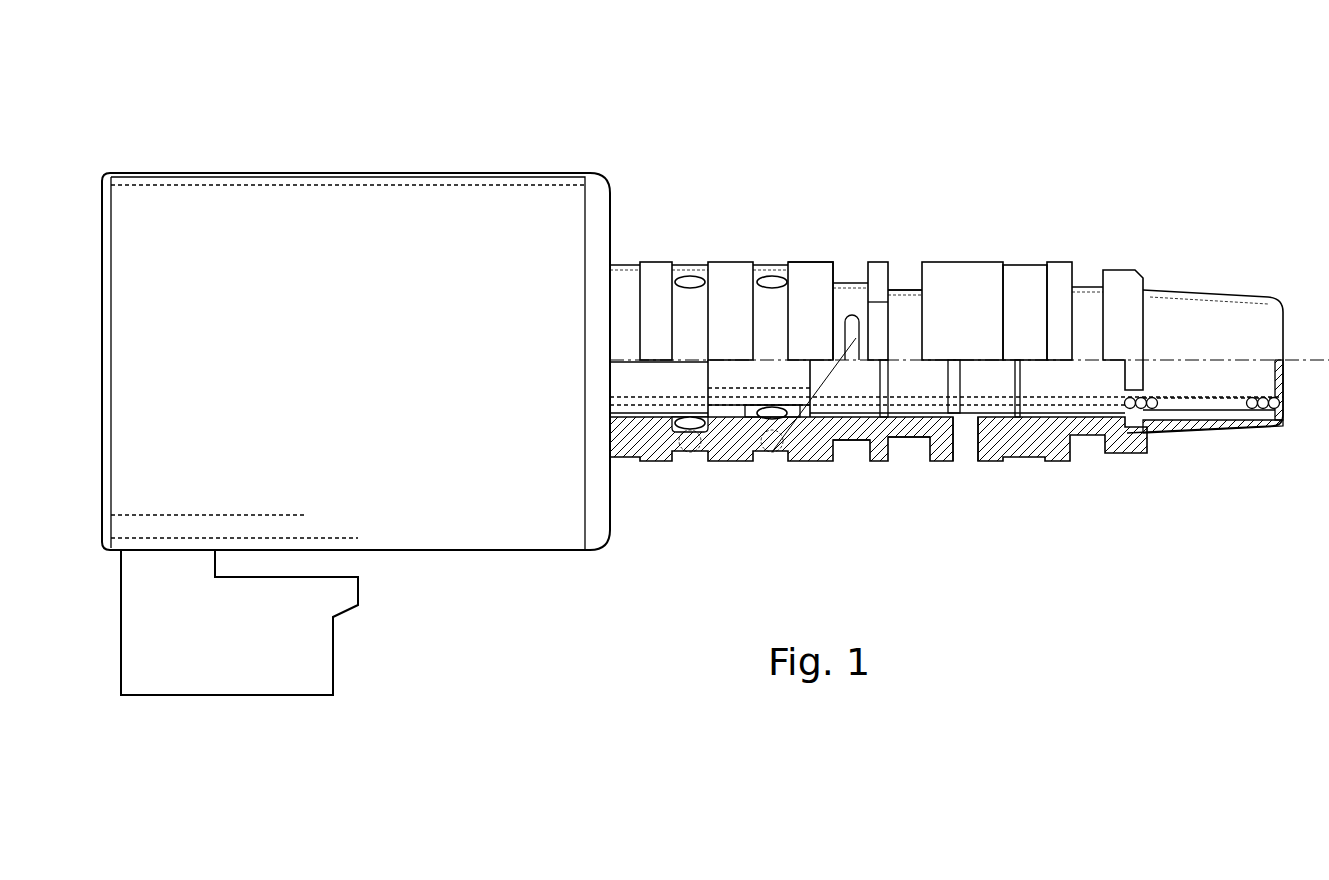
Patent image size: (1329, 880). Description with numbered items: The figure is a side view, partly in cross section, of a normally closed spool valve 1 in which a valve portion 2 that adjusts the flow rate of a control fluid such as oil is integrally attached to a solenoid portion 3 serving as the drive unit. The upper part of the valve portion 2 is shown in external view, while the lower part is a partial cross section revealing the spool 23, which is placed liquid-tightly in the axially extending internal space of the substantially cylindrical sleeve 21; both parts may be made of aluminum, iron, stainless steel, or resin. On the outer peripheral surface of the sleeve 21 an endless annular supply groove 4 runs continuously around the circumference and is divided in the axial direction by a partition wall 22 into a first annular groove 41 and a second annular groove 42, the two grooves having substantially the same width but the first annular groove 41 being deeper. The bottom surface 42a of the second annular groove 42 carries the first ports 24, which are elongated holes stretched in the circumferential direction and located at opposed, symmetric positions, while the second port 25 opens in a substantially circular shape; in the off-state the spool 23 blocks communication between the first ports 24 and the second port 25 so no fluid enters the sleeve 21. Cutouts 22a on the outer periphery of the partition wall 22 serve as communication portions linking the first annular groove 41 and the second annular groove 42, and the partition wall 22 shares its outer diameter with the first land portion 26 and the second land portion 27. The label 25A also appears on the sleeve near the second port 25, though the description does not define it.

The spool valve 1 is at (1014, 87).
The valve portion 2 is at (1253, 257).
The solenoid portion 3 is at (394, 172).
The supply groove 4 is at (937, 133).
The first annular groove 41 is at (893, 278).
The second annular groove 42 is at (846, 265).
The bottom surface 42a is at (855, 442).
The sleeve 21 is at (1121, 267).
The partition wall 22 is at (882, 462).
The cutouts 22a is at (878, 328).
The spool 23 is at (738, 382).
The first ports 24 is at (772, 418).
The second port 25 is at (773, 278).
The feedback passage 25A is at (761, 265).
The first land portion 26 is at (988, 285).
The second land portion 27 is at (822, 285).